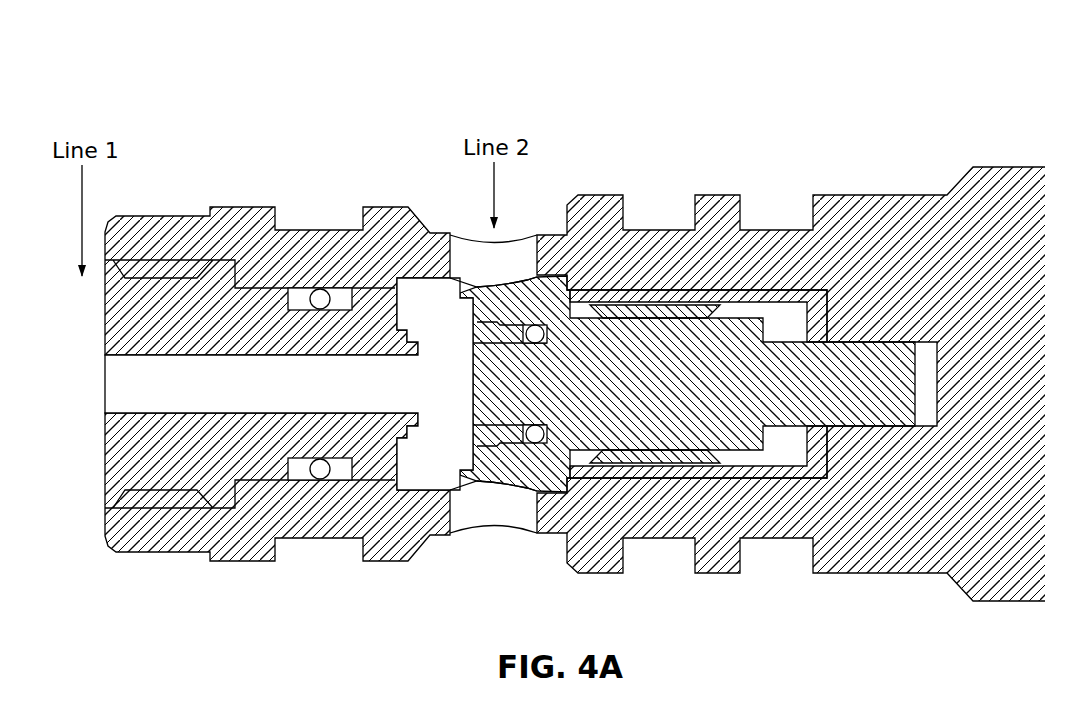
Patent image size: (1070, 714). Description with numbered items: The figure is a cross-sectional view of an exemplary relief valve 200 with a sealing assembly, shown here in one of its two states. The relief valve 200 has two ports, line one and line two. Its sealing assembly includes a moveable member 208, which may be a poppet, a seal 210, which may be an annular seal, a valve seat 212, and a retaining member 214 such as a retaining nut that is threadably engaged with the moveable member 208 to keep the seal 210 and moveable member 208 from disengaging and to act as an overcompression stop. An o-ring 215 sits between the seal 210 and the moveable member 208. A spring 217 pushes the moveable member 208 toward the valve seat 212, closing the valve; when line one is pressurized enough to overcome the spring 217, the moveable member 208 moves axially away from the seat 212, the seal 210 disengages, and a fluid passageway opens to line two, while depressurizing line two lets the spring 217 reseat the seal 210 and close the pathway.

The relief valve 200 is at (225, 158).
The moveable member 208 is at (578, 357).
The seal 210 is at (513, 332).
The valve seat 212 is at (390, 337).
The retaining member 214 is at (470, 312).
The o-ring 215 is at (540, 443).
The spring 217 is at (787, 312).